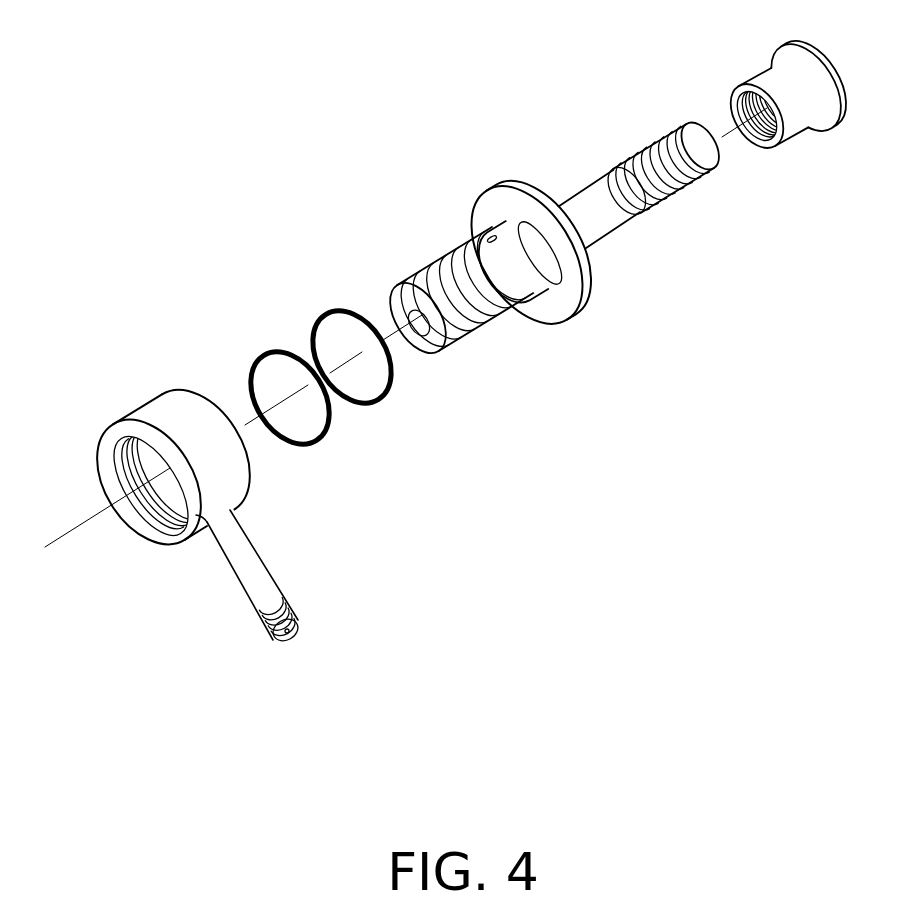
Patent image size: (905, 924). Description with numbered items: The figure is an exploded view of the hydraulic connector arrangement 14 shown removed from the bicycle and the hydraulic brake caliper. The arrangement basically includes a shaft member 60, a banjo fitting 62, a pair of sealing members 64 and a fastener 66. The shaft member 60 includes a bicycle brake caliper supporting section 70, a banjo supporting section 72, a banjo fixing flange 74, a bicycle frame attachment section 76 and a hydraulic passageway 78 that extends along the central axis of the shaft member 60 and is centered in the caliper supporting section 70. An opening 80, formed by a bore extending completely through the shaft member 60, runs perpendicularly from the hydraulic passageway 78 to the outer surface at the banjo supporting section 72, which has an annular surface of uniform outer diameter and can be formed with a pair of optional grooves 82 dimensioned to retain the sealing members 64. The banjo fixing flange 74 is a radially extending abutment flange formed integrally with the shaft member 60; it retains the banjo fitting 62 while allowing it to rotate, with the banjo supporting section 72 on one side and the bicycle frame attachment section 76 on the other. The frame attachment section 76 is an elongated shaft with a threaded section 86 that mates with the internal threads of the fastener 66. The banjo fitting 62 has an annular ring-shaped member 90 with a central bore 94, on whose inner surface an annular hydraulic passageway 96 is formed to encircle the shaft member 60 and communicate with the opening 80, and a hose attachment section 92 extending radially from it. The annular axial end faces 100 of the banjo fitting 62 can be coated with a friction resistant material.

The hydraulic connector arrangement 14 is at (224, 180).
The shaft member 60 is at (588, 200).
The banjo fitting 62 is at (145, 415).
The sealing members 64 is at (322, 318).
The fastener 66 is at (790, 45).
The bicycle brake caliper supporting section 70 is at (478, 320).
The banjo supporting section 72 is at (527, 283).
The banjo fixing flange 74 is at (562, 298).
The bicycle frame attachment section 76 is at (635, 210).
The hydraulic passageway 78 is at (421, 330).
The opening 80 is at (492, 240).
The grooves 82 is at (507, 230).
The threaded section 86 is at (668, 147).
The annular ring-shaped member 90 is at (237, 485).
The hose attachment section 92 is at (260, 568).
The central bore 94 is at (170, 503).
The annular hydraulic passageway 96 is at (113, 453).
The annular axial end faces 100 is at (205, 395).